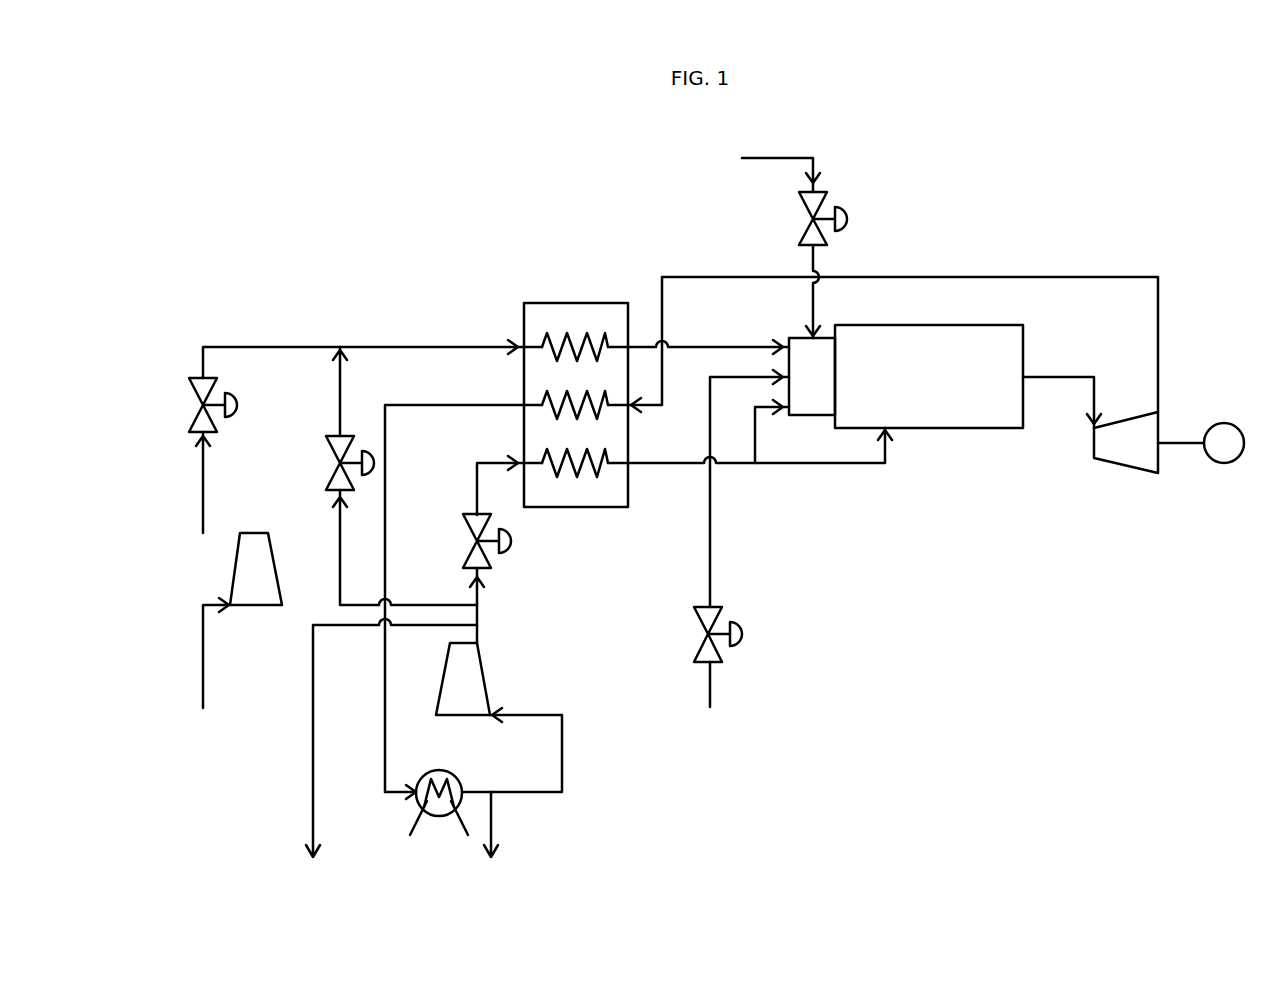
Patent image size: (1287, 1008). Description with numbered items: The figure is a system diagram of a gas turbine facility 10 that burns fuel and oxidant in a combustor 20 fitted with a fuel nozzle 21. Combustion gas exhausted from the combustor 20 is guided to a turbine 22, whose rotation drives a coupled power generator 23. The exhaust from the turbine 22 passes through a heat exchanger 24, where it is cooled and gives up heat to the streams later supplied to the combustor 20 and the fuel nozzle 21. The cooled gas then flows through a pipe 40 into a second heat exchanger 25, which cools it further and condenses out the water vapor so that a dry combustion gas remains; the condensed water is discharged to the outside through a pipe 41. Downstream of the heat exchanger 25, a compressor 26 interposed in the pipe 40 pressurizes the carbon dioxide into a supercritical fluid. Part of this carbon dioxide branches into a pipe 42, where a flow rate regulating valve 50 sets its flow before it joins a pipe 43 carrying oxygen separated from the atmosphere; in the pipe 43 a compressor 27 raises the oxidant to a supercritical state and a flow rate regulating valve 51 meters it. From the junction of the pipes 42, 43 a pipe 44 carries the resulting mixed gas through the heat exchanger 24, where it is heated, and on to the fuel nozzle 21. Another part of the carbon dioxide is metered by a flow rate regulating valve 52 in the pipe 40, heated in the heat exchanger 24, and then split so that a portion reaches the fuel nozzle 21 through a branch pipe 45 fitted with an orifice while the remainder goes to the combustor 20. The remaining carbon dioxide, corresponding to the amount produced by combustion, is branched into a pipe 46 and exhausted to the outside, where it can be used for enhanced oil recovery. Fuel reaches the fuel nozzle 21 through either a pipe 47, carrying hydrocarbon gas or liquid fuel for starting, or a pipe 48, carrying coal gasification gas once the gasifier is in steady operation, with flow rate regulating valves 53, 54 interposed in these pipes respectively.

The gas turbine facility 10 is at (518, 153).
The combustor 20 is at (935, 428).
The fuel nozzle 21 is at (813, 415).
The turbine 22 is at (1123, 466).
The power generator 23 is at (1227, 423).
The heat exchanger 24 is at (578, 303).
The heat exchanger 25 is at (440, 770).
The compressor 26 is at (483, 673).
The compressor 27 is at (236, 577).
The pipe 40 is at (477, 491).
The pipe 41 is at (491, 826).
The pipe 42 is at (340, 550).
The pipe 43 is at (203, 489).
The pipe 44 is at (442, 345).
The pipe 45 is at (755, 433).
The pipe 46 is at (313, 663).
The pipe 47 is at (710, 531).
The pipe 48 is at (813, 305).
The flow rate regulating valve 50 is at (330, 470).
The flow rate regulating valve 51 is at (194, 413).
The flow rate regulating valve 52 is at (468, 550).
The flow rate regulating valve 53 is at (700, 642).
The flow rate regulating valve 54 is at (804, 227).